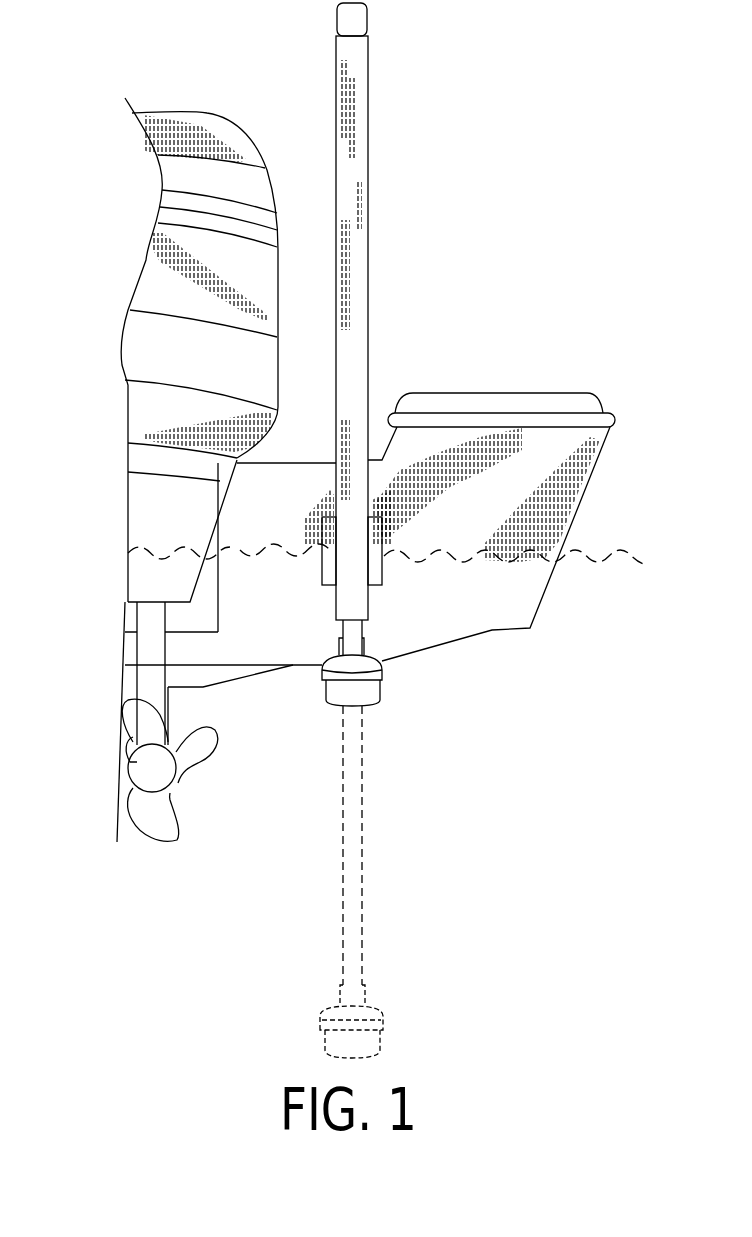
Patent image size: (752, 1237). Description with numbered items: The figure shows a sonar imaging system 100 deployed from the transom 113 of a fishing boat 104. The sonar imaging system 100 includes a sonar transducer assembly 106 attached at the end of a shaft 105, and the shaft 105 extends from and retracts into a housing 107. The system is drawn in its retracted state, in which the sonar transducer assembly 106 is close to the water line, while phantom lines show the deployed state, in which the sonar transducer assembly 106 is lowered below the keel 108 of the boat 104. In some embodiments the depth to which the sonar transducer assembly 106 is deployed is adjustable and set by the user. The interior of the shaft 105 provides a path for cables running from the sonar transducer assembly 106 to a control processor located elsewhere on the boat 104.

The sonar imaging system 100 is at (355, 362).
The fishing boat 104 is at (538, 462).
The shaft 105 is at (361, 855).
The sonar transducer assembly 106 is at (380, 685).
The housing 107 is at (368, 103).
The keel 108 is at (223, 697).
The transom 113 is at (243, 515).